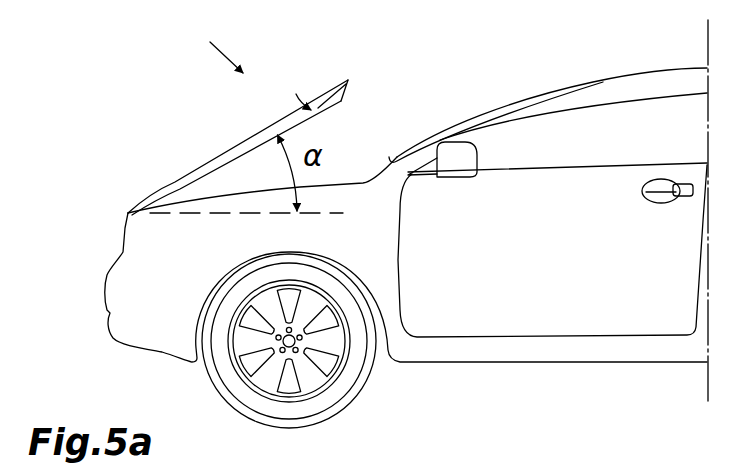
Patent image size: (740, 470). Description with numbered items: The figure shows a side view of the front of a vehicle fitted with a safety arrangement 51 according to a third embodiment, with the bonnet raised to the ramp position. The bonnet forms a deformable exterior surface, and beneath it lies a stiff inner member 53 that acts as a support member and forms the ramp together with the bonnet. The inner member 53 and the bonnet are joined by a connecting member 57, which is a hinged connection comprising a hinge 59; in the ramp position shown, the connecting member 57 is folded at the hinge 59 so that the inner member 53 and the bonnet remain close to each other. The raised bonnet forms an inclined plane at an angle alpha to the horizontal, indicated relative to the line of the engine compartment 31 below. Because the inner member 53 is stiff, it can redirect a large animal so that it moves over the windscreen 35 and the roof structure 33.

The safety arrangement 51 is at (216, 44).
The connecting member 57 is at (348, 80).
The hinge 59 is at (296, 88).
The inner member 53 is at (212, 165).
The windscreen 35 is at (521, 105).
The roof structure 33 is at (638, 89).
The engine compartment 31 is at (263, 200).